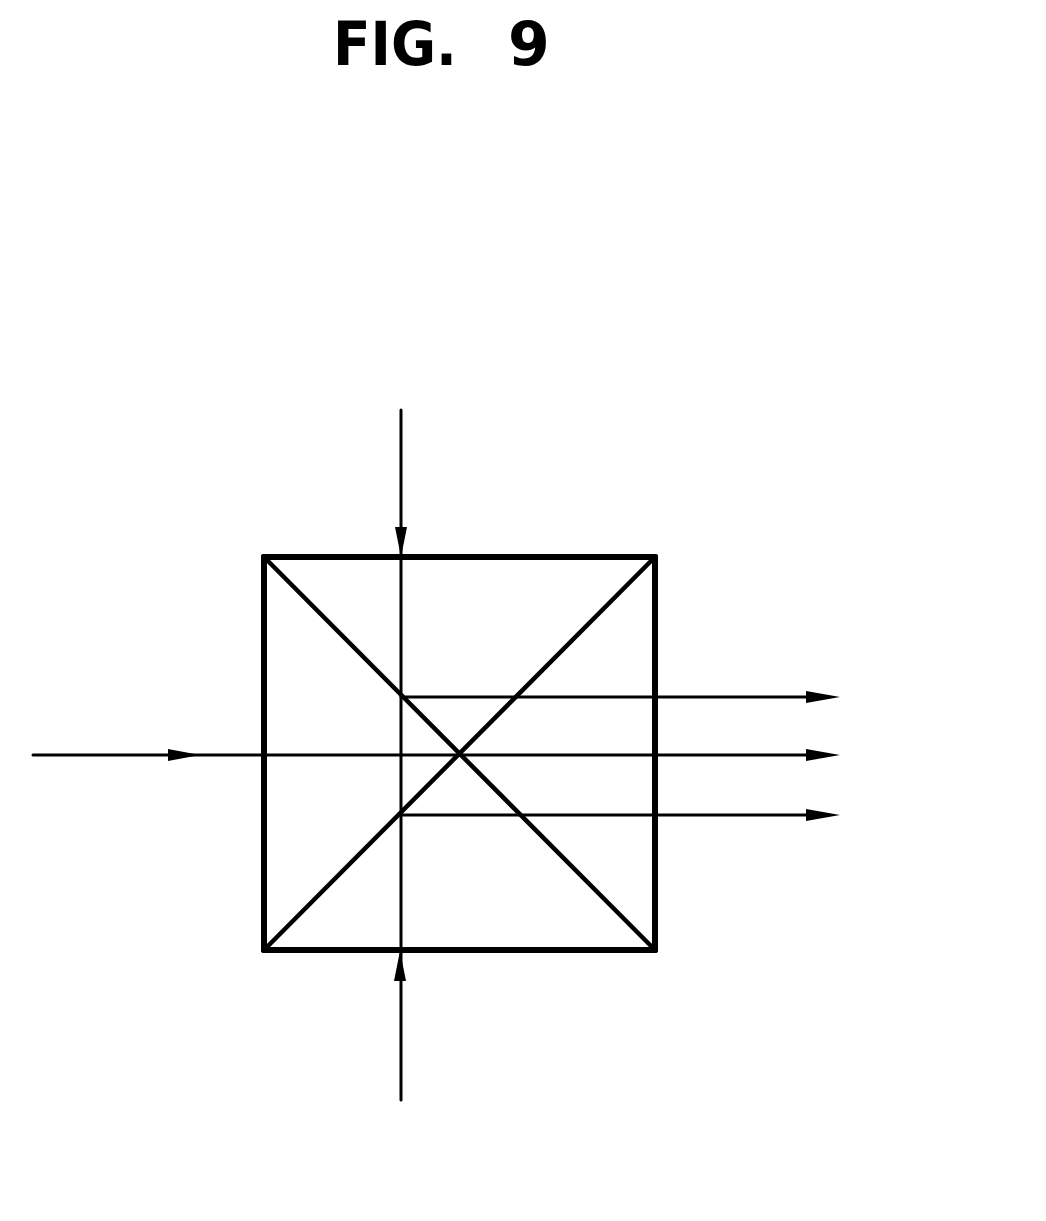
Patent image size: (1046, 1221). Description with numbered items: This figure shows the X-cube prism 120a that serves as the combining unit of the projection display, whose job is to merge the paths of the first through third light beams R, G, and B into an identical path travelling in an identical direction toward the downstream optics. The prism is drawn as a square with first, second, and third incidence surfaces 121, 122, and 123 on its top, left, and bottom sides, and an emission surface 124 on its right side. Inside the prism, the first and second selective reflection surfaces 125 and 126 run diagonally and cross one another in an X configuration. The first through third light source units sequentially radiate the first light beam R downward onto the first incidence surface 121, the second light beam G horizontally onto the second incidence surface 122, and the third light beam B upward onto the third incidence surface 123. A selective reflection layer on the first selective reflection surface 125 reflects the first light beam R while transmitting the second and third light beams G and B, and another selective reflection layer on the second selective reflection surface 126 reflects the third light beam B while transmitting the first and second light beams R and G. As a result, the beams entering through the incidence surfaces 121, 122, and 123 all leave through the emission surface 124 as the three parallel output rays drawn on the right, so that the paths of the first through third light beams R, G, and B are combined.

The X-cube prism 120a is at (698, 373).
The first incidence surface 121 is at (560, 557).
The second incidence surface 122 is at (262, 615).
The third incidence surface 123 is at (595, 953).
The emission surface 124 is at (659, 618).
The first selective reflection surface 125 is at (315, 604).
The second selective reflection surface 126 is at (312, 903).
The first light beam R is at (402, 450).
The second light beam G is at (112, 757).
The third light beam B is at (398, 1068).